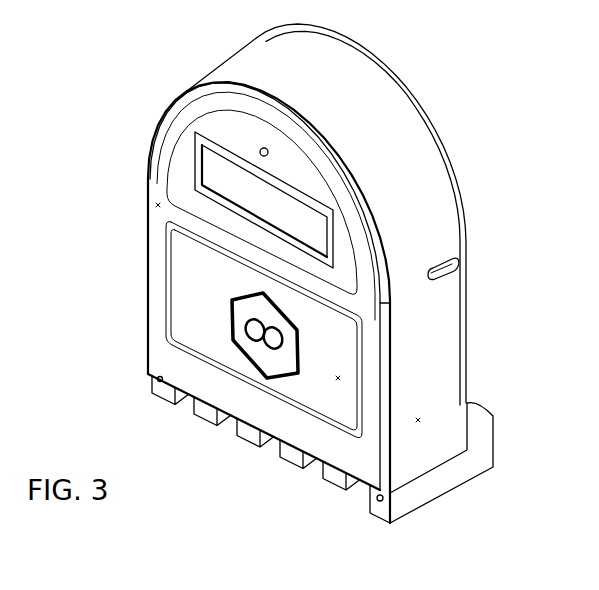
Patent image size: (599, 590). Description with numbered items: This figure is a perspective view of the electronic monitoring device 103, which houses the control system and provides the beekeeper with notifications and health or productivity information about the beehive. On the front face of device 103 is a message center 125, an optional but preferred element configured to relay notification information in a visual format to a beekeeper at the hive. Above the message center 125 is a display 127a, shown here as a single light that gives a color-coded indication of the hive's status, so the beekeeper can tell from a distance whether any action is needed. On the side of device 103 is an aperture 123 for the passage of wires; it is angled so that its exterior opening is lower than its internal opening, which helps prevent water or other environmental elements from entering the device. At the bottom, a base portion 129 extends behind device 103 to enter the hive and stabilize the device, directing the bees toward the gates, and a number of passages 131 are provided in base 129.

The electronic monitoring device 103 is at (493, 77).
The message center 125 is at (222, 182).
The display 127a is at (267, 149).
The aperture 123 is at (452, 268).
The passages 131 is at (366, 487).
The base portion 129 is at (425, 487).